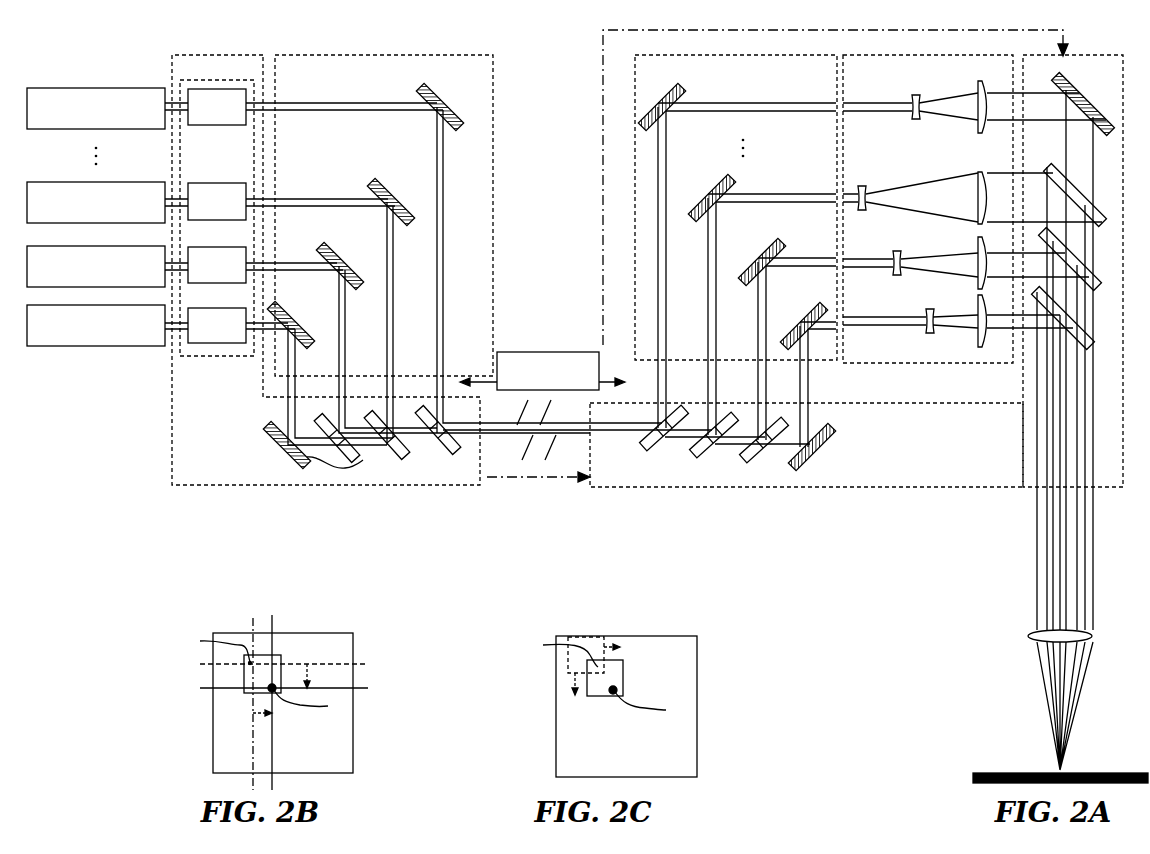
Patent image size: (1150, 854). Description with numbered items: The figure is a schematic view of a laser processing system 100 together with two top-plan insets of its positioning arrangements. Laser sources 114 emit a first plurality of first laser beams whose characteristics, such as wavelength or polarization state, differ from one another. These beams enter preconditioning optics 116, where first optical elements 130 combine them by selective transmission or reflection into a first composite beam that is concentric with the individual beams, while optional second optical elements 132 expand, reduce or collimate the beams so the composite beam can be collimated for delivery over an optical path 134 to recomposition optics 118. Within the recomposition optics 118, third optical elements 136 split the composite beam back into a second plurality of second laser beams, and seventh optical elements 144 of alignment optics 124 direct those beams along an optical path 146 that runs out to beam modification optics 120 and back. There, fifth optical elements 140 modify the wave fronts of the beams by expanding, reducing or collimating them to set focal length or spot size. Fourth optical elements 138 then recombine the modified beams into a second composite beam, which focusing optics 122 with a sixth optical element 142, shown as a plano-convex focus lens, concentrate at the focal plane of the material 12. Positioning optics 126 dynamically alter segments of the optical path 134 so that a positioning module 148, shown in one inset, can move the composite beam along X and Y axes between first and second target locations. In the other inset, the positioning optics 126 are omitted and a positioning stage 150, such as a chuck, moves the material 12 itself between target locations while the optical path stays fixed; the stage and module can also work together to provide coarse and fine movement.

In FIG. 2A, the laser processing system 100 is at (135, 483).
In FIG. 2A, the material 12 is at (975, 773).
In FIG. 2A, the laser sources 114 is at (96, 217).
In FIG. 2A, the preconditioning optics 116 is at (172, 370).
In FIG. 2A, the recomposition optics 118 is at (800, 487).
In FIG. 2A, the beam modification optics 120 is at (913, 365).
In FIG. 2A, the focusing optics 122 is at (994, 577).
In FIG. 2A, the alignment optics 124 is at (637, 362).
In FIG. 2A, the positioning optics 126 is at (542, 371).
In FIG. 2A, the first optical elements 130 is at (400, 440).
In FIG. 2A, the second optical elements 132 is at (254, 357).
In FIG. 2A, the optical path 134 is at (515, 478).
In FIG. 2A, the third optical elements 136 is at (658, 447).
In FIG. 2A, the fourth optical elements 138 is at (1097, 131).
In FIG. 2A, the fifth optical elements 140 is at (919, 118).
In FIG. 2A, the sixth optical elements 142 is at (1092, 636).
In FIG. 2A, the seventh optical elements 144 is at (425, 90).
In FIG. 2A, the optical path 146 is at (603, 160).
In FIG. 2B, the positioning module 148 is at (370, 622).
In FIG. 2C, the positioning stage 150 is at (718, 618).